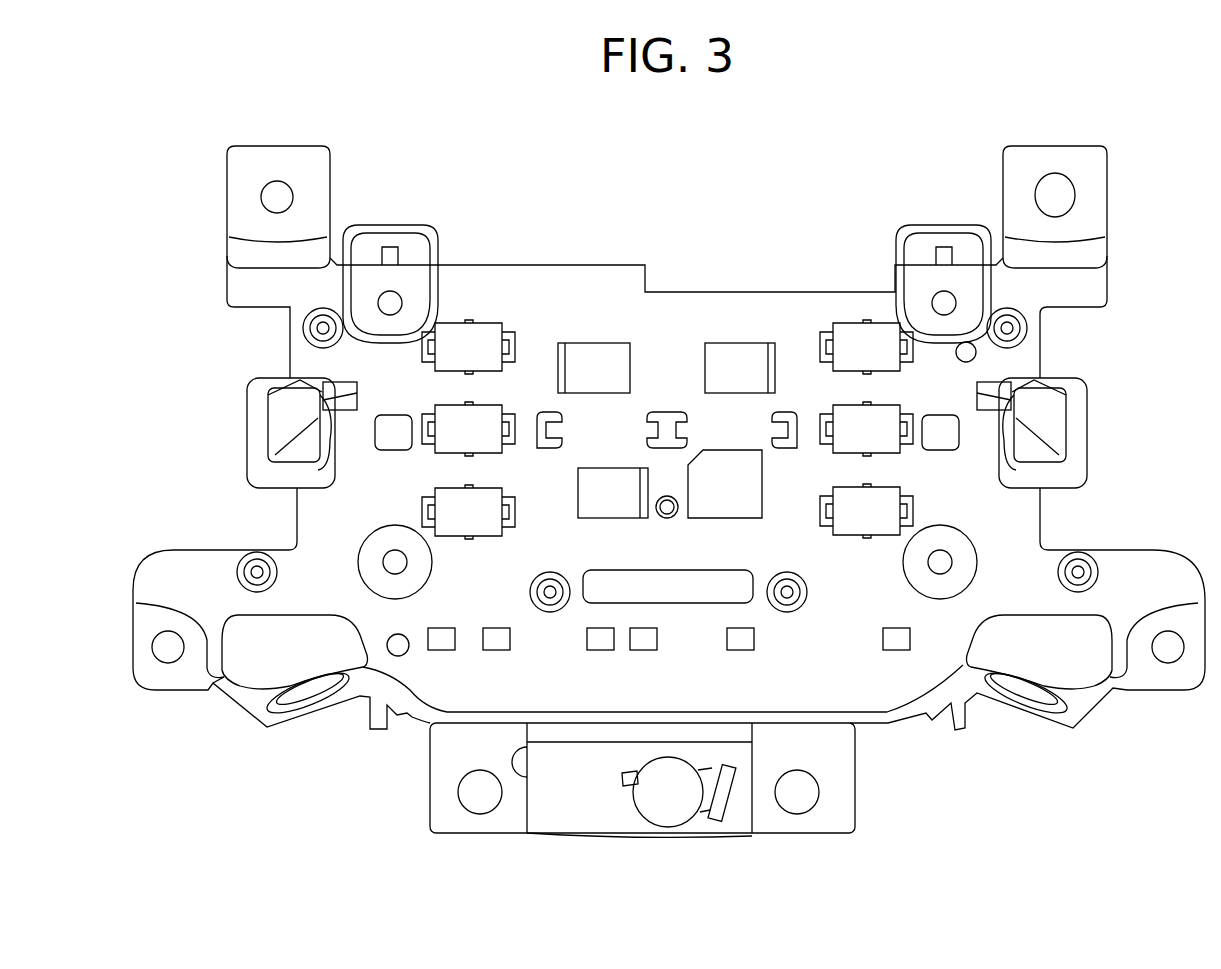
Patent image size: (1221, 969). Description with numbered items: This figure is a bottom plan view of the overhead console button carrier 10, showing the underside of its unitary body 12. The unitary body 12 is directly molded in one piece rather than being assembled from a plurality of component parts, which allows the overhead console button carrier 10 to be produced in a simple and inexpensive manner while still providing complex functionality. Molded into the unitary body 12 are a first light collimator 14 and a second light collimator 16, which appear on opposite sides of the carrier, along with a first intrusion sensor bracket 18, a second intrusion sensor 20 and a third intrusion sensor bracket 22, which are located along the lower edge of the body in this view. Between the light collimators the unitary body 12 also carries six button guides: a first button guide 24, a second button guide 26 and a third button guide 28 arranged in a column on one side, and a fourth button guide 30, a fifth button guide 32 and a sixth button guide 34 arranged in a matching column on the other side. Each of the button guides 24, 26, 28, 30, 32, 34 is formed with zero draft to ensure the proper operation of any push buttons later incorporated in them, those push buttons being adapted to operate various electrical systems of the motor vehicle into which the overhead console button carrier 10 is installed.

The overhead console button carrier 10 is at (875, 150).
The unitary body 12 is at (857, 678).
The first light collimator 14 is at (287, 424).
The second light collimator 16 is at (1060, 430).
The first intrusion sensor bracket 18 is at (313, 700).
The second intrusion sensor 20 is at (667, 828).
The third intrusion sensor bracket 22 is at (1027, 700).
The first button guide 24 is at (450, 323).
The second button guide 26 is at (490, 410).
The third button guide 28 is at (423, 508).
The fourth button guide 30 is at (862, 323).
The fifth button guide 32 is at (893, 407).
The sixth button guide 34 is at (912, 508).